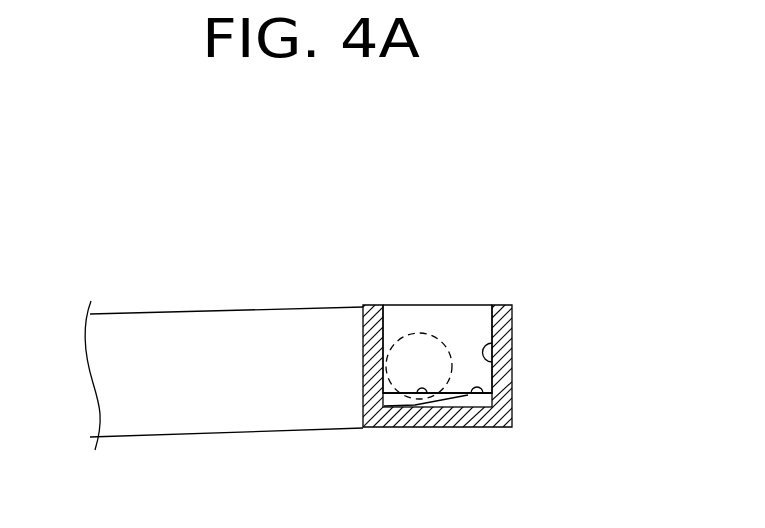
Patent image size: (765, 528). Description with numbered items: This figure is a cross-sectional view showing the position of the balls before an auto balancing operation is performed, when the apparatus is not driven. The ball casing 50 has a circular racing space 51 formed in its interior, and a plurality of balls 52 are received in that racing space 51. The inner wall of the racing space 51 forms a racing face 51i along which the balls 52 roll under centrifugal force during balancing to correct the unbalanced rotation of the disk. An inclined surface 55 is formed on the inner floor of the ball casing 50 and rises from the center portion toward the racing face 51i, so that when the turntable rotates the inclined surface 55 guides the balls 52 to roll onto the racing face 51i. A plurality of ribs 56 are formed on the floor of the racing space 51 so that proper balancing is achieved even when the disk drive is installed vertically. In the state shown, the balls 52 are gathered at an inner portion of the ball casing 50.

The ball casing 50 is at (505, 333).
The racing space 51 is at (475, 323).
The racing face 51i is at (496, 360).
The ball 52 is at (419, 340).
The inclined surface 55 is at (468, 395).
The rib 56 is at (422, 396).